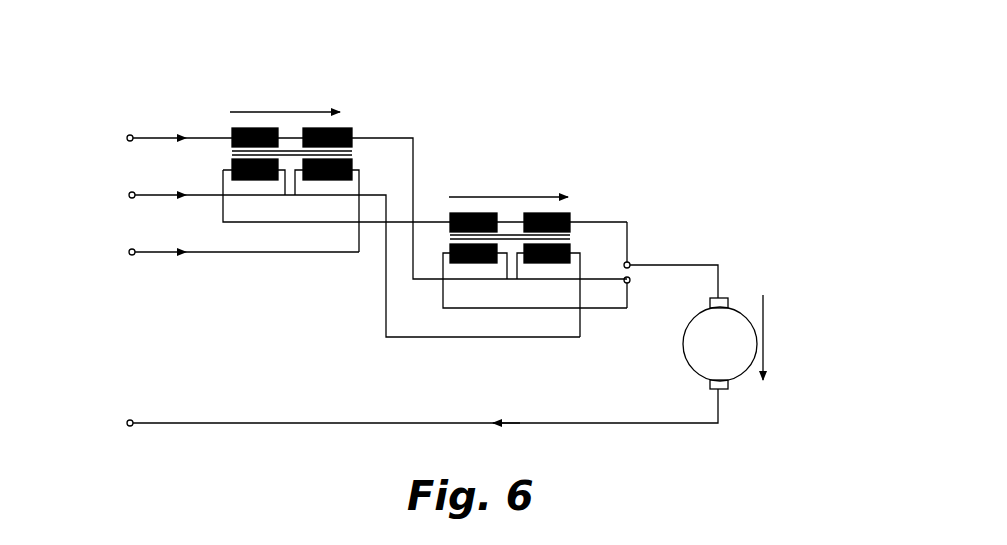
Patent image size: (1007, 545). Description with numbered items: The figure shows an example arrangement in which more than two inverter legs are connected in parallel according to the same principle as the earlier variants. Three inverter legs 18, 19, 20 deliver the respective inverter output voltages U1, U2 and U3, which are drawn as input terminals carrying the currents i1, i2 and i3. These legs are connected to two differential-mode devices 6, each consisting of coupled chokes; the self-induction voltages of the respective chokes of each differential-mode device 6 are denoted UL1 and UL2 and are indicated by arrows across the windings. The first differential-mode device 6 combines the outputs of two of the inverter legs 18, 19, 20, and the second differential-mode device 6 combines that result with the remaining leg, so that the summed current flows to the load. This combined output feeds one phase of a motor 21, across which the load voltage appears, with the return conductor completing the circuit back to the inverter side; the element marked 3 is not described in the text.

The inverter leg 18 is at (146, 132).
The inverter leg 19 is at (146, 200).
The inverter leg 20 is at (213, 256).
The differential-mode device 6 is at (397, 110).
The motor 21 is at (739, 324).
The load circuit / summing current path 3 is at (752, 408).